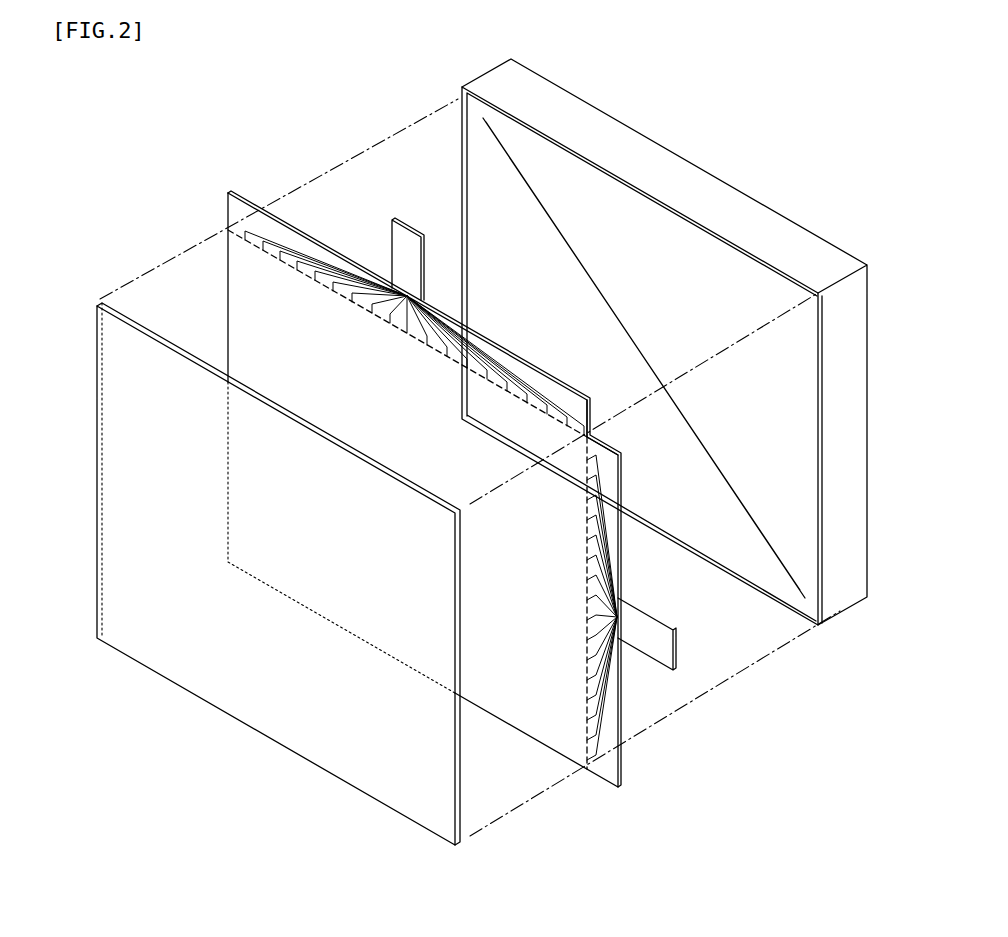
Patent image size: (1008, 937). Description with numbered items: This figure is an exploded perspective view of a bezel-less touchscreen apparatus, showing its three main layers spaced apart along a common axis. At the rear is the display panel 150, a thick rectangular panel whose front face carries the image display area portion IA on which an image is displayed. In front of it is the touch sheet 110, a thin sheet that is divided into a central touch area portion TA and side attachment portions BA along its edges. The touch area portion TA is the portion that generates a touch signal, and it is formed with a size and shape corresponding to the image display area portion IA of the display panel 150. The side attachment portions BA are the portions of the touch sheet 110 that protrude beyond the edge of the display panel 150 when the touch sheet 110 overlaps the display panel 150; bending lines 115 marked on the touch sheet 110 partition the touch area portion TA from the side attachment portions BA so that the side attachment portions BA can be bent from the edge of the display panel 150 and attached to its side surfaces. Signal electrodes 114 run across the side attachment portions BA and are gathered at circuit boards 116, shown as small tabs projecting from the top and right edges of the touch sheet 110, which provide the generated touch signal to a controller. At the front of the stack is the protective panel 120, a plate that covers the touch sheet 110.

The touch sheet 110 is at (386, 482).
The signal electrodes 114 is at (330, 260).
The bending lines 115 is at (578, 428).
The circuit board (FPCB) 116 is at (397, 245).
The protective panel 120 is at (117, 362).
The display panel 150 is at (621, 342).
The side attachment portions BA is at (250, 217).
The touch area portion TA is at (240, 290).
The image display area portion IA is at (487, 165).